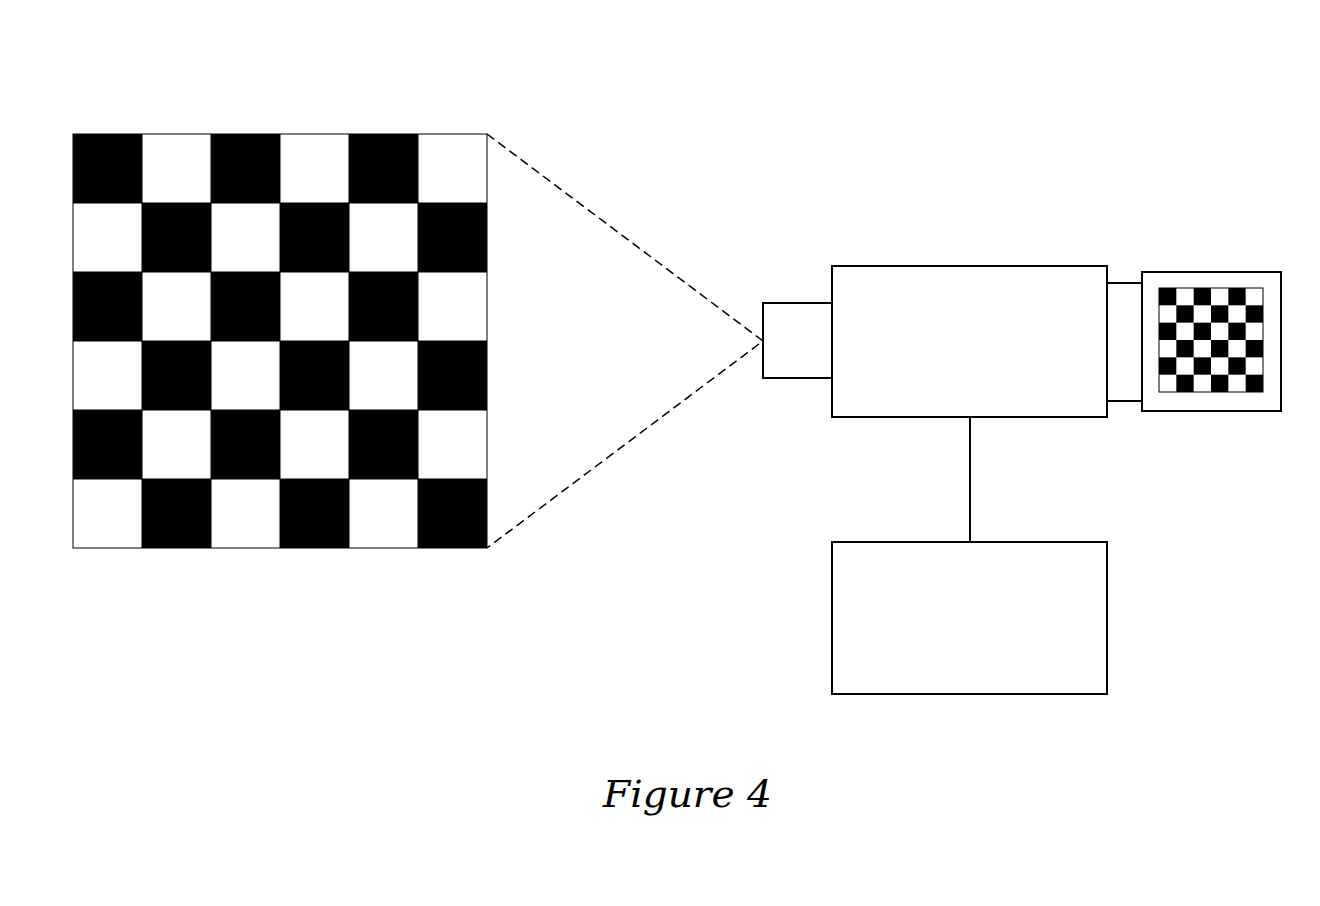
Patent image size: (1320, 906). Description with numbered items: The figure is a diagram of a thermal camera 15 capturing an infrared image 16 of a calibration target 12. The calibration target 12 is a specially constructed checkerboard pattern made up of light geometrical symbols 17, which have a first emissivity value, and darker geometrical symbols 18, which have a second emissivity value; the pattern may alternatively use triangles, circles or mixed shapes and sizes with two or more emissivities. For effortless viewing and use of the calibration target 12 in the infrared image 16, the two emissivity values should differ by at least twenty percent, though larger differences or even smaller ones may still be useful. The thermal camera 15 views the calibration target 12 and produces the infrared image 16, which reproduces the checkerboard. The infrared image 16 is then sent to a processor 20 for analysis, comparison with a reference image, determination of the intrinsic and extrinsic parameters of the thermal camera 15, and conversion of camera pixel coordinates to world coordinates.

The calibration target 12 is at (320, 307).
The thermal camera 15 is at (1043, 265).
The infrared image 16 is at (1203, 288).
The light geometrical symbols 17 is at (468, 310).
The darker geometrical symbols 18 is at (242, 134).
The processor 20 is at (1061, 542).